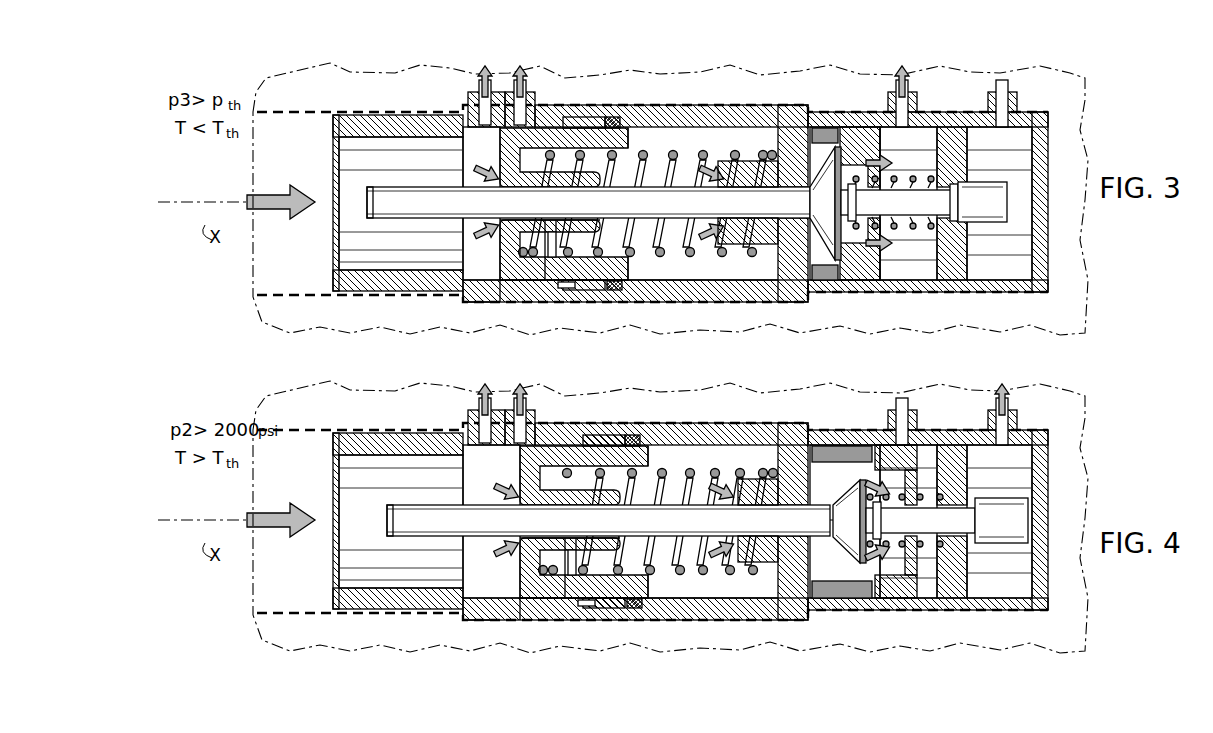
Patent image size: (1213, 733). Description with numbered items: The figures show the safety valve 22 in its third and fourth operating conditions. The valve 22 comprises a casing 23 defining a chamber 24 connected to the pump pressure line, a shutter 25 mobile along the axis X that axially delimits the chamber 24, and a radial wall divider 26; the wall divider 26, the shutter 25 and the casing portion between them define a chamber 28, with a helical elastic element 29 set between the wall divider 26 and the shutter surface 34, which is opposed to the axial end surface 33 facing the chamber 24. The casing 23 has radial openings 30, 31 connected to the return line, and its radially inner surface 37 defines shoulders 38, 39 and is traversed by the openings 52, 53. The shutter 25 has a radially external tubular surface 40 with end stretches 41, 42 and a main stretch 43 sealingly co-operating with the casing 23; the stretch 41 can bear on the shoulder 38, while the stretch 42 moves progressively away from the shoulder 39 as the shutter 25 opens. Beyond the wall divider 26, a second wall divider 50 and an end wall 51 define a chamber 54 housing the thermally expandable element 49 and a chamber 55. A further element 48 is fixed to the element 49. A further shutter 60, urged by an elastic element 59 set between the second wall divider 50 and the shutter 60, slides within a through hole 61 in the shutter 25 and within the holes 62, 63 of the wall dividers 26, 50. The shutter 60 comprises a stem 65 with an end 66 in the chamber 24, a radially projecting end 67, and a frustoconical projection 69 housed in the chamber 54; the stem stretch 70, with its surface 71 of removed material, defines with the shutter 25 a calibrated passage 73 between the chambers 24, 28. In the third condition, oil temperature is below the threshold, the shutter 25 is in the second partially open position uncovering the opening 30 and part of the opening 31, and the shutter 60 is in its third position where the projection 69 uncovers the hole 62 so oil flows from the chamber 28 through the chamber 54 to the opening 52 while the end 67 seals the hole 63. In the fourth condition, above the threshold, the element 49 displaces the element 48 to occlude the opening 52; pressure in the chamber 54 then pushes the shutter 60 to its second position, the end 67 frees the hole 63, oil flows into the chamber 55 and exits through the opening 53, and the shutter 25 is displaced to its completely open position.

In FIG. 3, the valve 22 is at (1098, 120).
In FIG. 4, the valve 22 is at (717, 492).
In FIG. 3, the casing 23 is at (368, 122).
In FIG. 4, the casing 23 is at (690, 510).
In FIG. 3, the chamber 24 is at (372, 262).
In FIG. 4, the chamber 24 is at (385, 546).
In FIG. 3, the shutter 25 is at (588, 122).
In FIG. 4, the shutter 25 is at (584, 546).
In FIG. 3, the wall divider 26 is at (790, 118).
In FIG. 4, the wall divider 26 is at (793, 507).
In FIG. 3, the chamber 28 is at (700, 125).
In FIG. 4, the chamber 28 is at (670, 481).
In FIG. 3, the elastic element 29 is at (660, 265).
In FIG. 4, the elastic element 29 is at (648, 581).
In FIG. 3, the opening 30 is at (470, 96).
In FIG. 4, the opening 30 is at (467, 414).
In FIG. 3, the opening 31 is at (530, 105).
In FIG. 4, the opening 31 is at (544, 414).
In FIG. 3, the axial end surface 33 is at (470, 157).
In FIG. 4, the axial end surface 33 is at (468, 521).
In FIG. 3, the surface 34 is at (640, 128).
In FIG. 4, the surface 34 is at (692, 557).
In FIG. 3, the radially inner surface 37 is at (660, 282).
In FIG. 4, the radially inner surface 37 is at (713, 477).
In FIG. 3, the shoulder 38 is at (480, 297).
In FIG. 4, the shoulder 38 is at (481, 624).
In FIG. 3, the shoulder 39 is at (576, 287).
In FIG. 4, the shoulder 39 is at (593, 622).
In FIG. 3, the radially external tubular surface 40 is at (574, 284).
In FIG. 4, the radially external tubular surface 40 is at (584, 639).
In FIG. 3, the axial end stretch 41 is at (500, 292).
In FIG. 4, the axial end stretch 41 is at (526, 621).
In FIG. 3, the axial end stretch 42 is at (625, 282).
In FIG. 4, the axial end stretch 42 is at (658, 501).
In FIG. 3, the main stretch 43 is at (578, 130).
In FIG. 4, the main stretch 43 is at (604, 485).
In FIG. 3, the further element 48 is at (862, 272).
In FIG. 4, the further element 48 is at (904, 541).
In FIG. 3, the thermally expandable element 49 is at (826, 285).
In FIG. 4, the thermally expandable element 49 is at (843, 541).
In FIG. 3, the second wall divider 50 is at (950, 262).
In FIG. 4, the second wall divider 50 is at (952, 543).
In FIG. 3, the end wall 51 is at (1042, 128).
In FIG. 4, the end wall 51 is at (1056, 520).
In FIG. 3, the opening 52 is at (903, 108).
In FIG. 4, the opening 52 is at (919, 421).
In FIG. 3, the opening 53 is at (1010, 108).
In FIG. 4, the opening 53 is at (1022, 414).
In FIG. 3, the chamber 54 is at (843, 262).
In FIG. 4, the chamber 54 is at (838, 480).
In FIG. 3, the chamber 55 is at (1022, 131).
In FIG. 4, the chamber 55 is at (1025, 521).
In FIG. 3, the elastic element 59 is at (900, 230).
In FIG. 4, the elastic element 59 is at (903, 557).
In FIG. 3, the further shutter 60 is at (1005, 175).
In FIG. 4, the further shutter 60 is at (1026, 538).
In FIG. 3, the through hole 61 is at (575, 204).
In FIG. 4, the through hole 61 is at (581, 545).
In FIG. 3, the hole 62 is at (748, 219).
In FIG. 4, the hole 62 is at (757, 537).
In FIG. 3, the hole 63 is at (985, 198).
In FIG. 4, the hole 63 is at (947, 539).
In FIG. 3, the stem 65 is at (452, 206).
In FIG. 4, the stem 65 is at (608, 537).
In FIG. 3, the end 66 is at (386, 198).
In FIG. 4, the end 66 is at (383, 502).
In FIG. 3, the end 67 is at (1000, 212).
In FIG. 4, the end 67 is at (1030, 542).
In FIG. 3, the projection 69 is at (826, 158).
In FIG. 4, the projection 69 is at (848, 483).
In FIG. 3, the stretch 70 is at (541, 218).
In FIG. 4, the stretch 70 is at (593, 485).
In FIG. 3, the surface with material removed 71 is at (556, 226).
In FIG. 4, the surface with material removed 71 is at (556, 586).
In FIG. 3, the calibrated passage 73 is at (520, 232).
In FIG. 4, the calibrated passage 73 is at (519, 537).